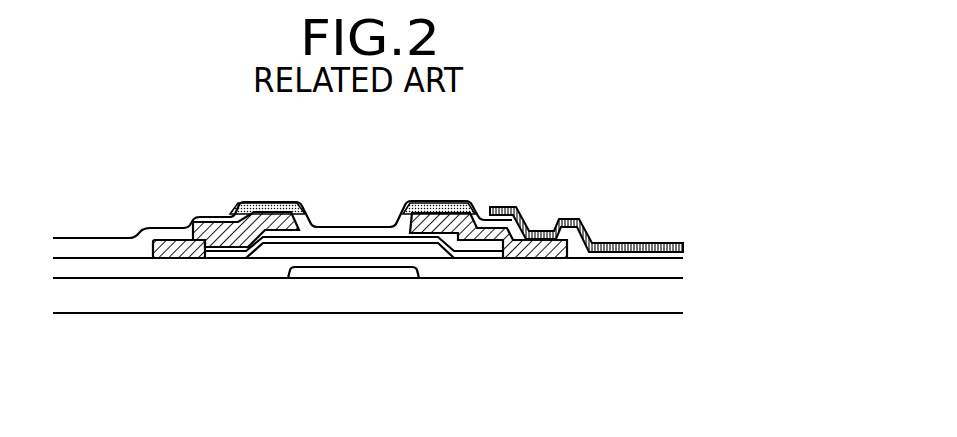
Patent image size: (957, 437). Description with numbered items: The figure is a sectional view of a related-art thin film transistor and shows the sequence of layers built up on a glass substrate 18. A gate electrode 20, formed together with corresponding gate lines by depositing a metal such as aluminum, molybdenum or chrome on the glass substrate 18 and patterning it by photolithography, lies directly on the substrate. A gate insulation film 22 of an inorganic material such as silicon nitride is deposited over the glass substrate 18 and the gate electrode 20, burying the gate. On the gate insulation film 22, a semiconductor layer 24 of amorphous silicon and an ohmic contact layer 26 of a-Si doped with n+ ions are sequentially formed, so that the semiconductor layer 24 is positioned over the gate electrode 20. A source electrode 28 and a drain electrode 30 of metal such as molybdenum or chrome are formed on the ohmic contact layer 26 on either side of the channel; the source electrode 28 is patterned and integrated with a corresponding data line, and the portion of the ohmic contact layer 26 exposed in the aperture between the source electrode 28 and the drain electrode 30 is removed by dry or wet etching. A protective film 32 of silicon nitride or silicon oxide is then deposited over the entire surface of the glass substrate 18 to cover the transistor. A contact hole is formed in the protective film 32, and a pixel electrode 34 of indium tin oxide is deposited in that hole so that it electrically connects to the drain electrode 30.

The glass substrate 18 is at (670, 298).
The gate electrode 20 is at (343, 270).
The gate insulation film 22 is at (195, 270).
The semiconductor layer 24 is at (463, 258).
The ohmic contact layer 26 is at (273, 214).
The source electrode 28 is at (205, 222).
The drain electrode 30 is at (473, 212).
The protective film 32 is at (230, 209).
The pixel electrode 34 is at (528, 228).